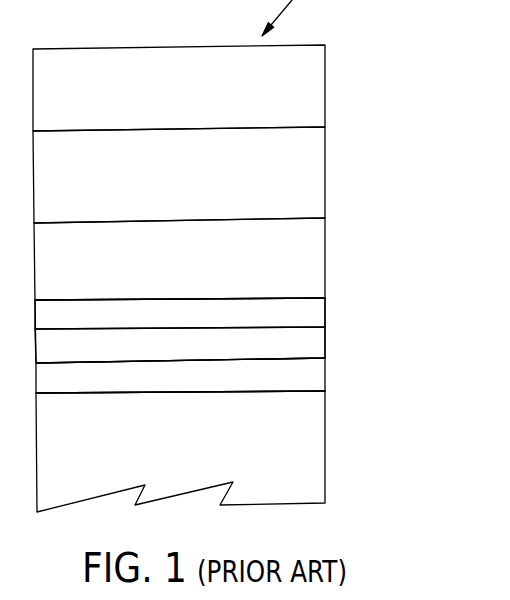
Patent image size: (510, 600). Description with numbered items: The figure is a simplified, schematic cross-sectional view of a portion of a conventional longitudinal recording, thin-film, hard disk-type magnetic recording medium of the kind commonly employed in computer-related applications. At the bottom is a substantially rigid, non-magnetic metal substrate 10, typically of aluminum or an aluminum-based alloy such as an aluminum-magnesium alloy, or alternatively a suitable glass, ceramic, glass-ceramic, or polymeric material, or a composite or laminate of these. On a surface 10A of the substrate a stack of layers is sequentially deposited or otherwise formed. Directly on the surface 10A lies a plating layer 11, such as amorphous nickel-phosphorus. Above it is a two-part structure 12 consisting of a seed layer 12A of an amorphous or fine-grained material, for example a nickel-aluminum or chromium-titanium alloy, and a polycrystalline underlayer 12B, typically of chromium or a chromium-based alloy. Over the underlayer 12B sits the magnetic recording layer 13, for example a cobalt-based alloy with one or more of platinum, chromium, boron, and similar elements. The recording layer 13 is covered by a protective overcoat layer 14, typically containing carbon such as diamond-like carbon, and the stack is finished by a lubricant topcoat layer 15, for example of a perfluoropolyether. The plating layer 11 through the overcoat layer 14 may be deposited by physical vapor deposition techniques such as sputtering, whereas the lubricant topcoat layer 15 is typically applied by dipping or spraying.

The substrate 10 is at (326, 460).
The surface 10A is at (227, 408).
The plating layer 11 is at (326, 373).
The seed layer and underlayer 12 is at (421, 290).
The seed layer 12A is at (326, 338).
The polycrystalline underlayer 12B is at (326, 305).
The magnetic recording layer 13 is at (326, 249).
The protective overcoat layer 14 is at (326, 167).
The lubricant topcoat layer 15 is at (326, 83).